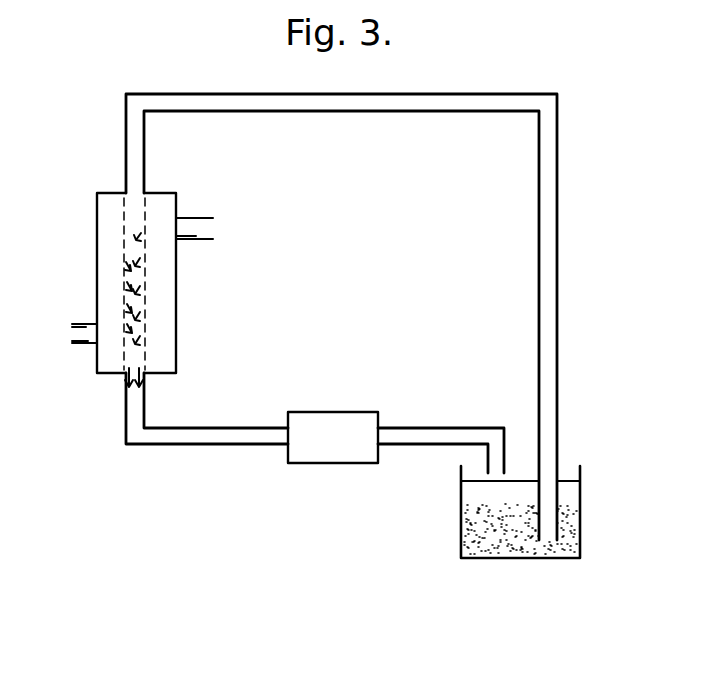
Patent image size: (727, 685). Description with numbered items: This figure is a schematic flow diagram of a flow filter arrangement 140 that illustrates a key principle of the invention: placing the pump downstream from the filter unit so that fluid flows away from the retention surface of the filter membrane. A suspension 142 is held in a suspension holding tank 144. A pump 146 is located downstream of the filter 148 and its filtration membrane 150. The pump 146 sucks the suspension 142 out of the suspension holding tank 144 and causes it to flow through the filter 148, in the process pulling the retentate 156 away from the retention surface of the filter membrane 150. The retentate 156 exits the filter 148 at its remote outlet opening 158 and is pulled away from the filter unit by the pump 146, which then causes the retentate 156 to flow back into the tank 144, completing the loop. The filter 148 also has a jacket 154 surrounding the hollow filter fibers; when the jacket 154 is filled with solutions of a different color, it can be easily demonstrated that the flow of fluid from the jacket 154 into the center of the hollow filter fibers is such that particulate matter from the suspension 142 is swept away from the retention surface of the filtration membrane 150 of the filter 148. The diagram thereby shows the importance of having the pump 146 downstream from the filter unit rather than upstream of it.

The flow filter arrangement 140 is at (580, 180).
The suspension 142 is at (493, 523).
The suspension holding tank 144 is at (580, 508).
The pump 146 is at (350, 412).
The filter 148 is at (176, 313).
The filtration membrane 150 is at (125, 252).
The jacket 154 is at (97, 285).
The retentate 156 is at (133, 410).
The remote outlet opening 158 is at (127, 382).